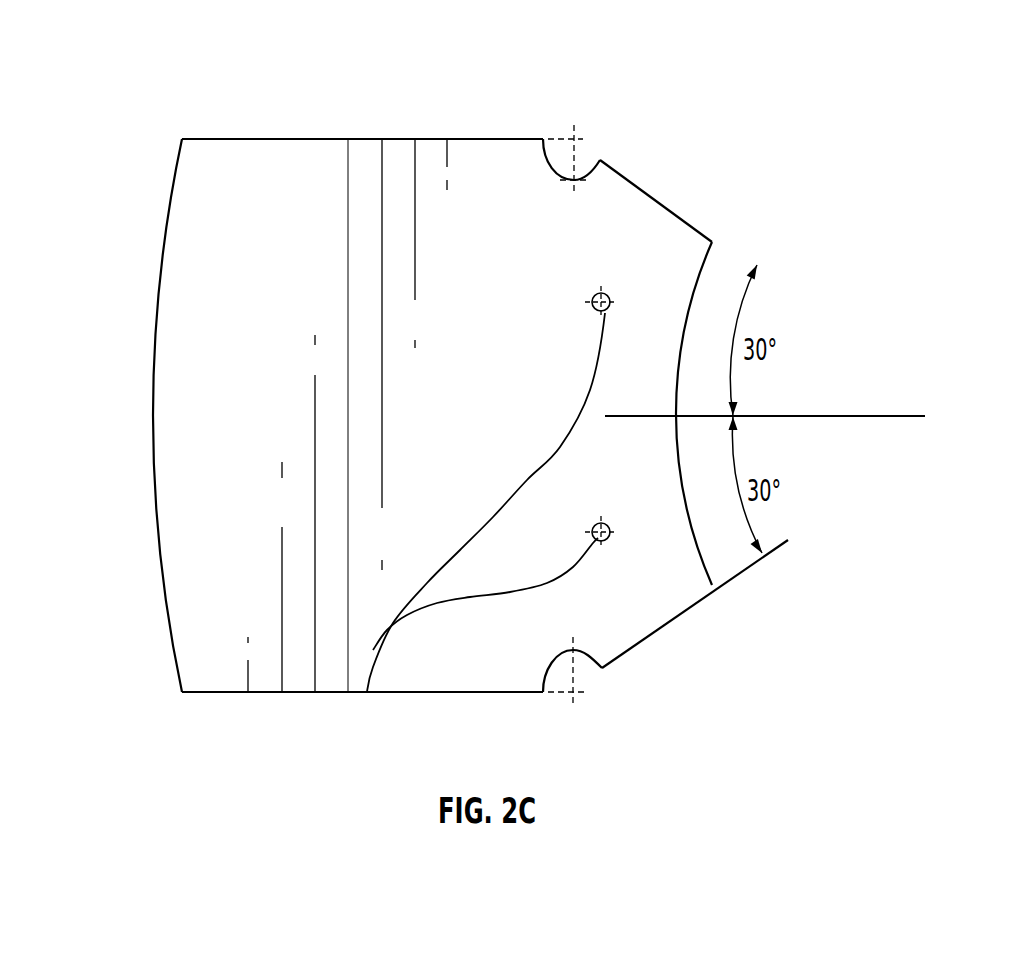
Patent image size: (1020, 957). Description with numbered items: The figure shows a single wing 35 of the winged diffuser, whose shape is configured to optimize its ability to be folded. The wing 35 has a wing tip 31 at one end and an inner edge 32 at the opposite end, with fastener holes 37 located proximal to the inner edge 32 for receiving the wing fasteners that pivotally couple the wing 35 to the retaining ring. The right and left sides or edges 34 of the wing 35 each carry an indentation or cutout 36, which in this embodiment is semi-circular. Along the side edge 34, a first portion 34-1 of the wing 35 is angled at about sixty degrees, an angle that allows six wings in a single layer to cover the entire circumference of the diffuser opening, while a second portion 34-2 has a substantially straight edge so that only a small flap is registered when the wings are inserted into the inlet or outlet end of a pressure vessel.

The wing 35 is at (232, 50).
The wing tip 31 is at (153, 365).
The side edge 34 is at (350, 139).
The first portion 34-1 is at (663, 202).
The second portion 34-2 is at (420, 140).
The cutout 36 is at (585, 172).
The inner edge 32 is at (682, 358).
The fastener hole 37 is at (367, 692).